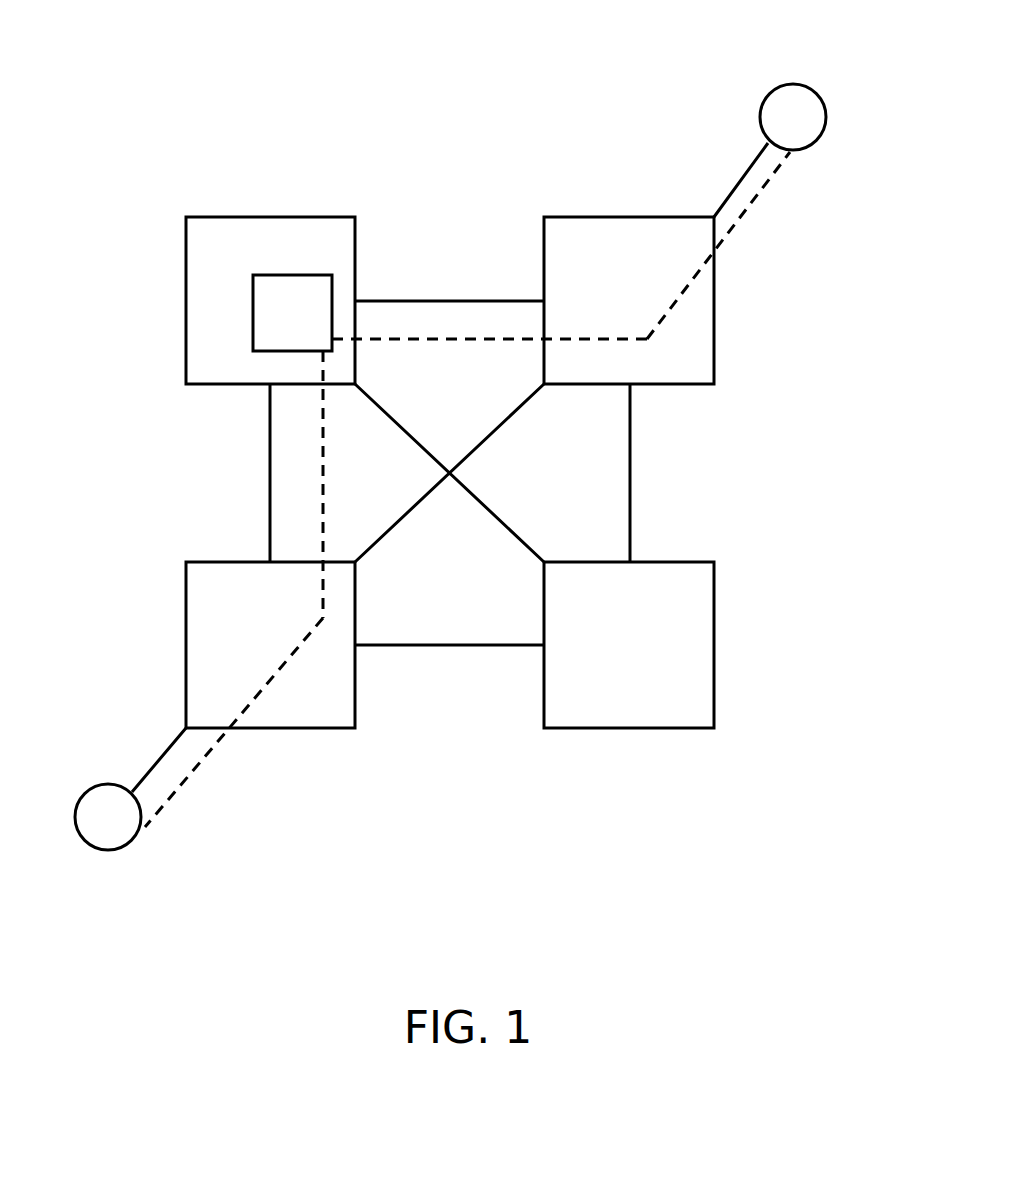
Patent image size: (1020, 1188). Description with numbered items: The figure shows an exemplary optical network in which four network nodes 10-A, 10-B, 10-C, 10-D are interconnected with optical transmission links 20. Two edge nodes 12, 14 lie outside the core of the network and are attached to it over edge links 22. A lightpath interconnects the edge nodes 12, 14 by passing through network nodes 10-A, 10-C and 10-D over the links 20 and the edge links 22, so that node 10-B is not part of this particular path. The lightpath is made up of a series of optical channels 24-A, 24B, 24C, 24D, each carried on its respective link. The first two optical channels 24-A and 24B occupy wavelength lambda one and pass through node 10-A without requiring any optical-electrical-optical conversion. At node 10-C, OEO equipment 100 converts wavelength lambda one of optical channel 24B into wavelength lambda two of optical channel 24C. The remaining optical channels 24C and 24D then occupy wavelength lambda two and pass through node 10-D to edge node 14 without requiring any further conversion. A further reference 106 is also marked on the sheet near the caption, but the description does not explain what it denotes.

The network node A 10-A is at (272, 730).
The network node B 10-B is at (630, 728).
The network node C 10-C is at (270, 217).
The network node D 10-D is at (560, 217).
The edge node 12 is at (108, 784).
The edge node 14 is at (790, 84).
The optical transmission link 20 is at (410, 298).
The edge link 22 is at (745, 162).
The optical channel 24-A is at (187, 780).
The optical channel 24B is at (323, 517).
The optical channel 24C is at (445, 339).
The optical channel 24D is at (762, 193).
The OEO equipment 100 is at (253, 313).
The optical network 106 is at (598, 965).